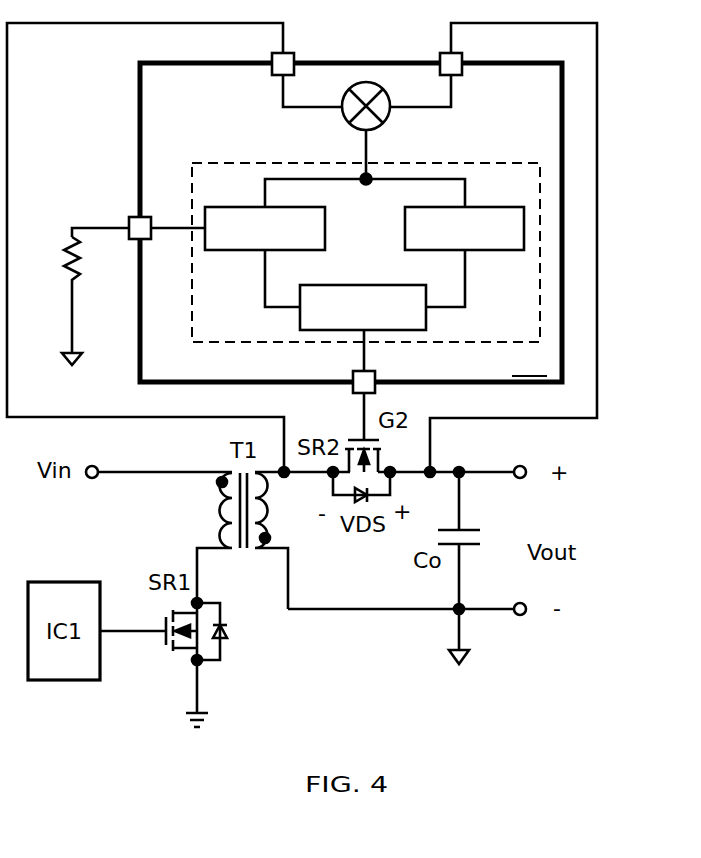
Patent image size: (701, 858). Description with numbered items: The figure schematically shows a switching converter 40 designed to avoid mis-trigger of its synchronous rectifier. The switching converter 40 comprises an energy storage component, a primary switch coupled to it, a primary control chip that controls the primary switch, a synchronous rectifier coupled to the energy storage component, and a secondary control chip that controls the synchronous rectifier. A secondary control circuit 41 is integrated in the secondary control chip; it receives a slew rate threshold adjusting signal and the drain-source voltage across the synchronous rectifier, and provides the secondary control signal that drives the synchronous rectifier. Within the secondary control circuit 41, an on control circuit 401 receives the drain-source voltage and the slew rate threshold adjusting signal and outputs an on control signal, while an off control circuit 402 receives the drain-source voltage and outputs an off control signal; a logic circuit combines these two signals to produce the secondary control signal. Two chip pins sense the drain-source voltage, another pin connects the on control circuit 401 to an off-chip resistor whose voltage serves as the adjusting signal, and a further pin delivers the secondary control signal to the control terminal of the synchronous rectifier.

The switching converter 40 is at (331, 247).
The secondary control circuit 41 is at (361, 242).
The on control circuit 401 is at (265, 228).
The off control circuit 402 is at (464, 228).